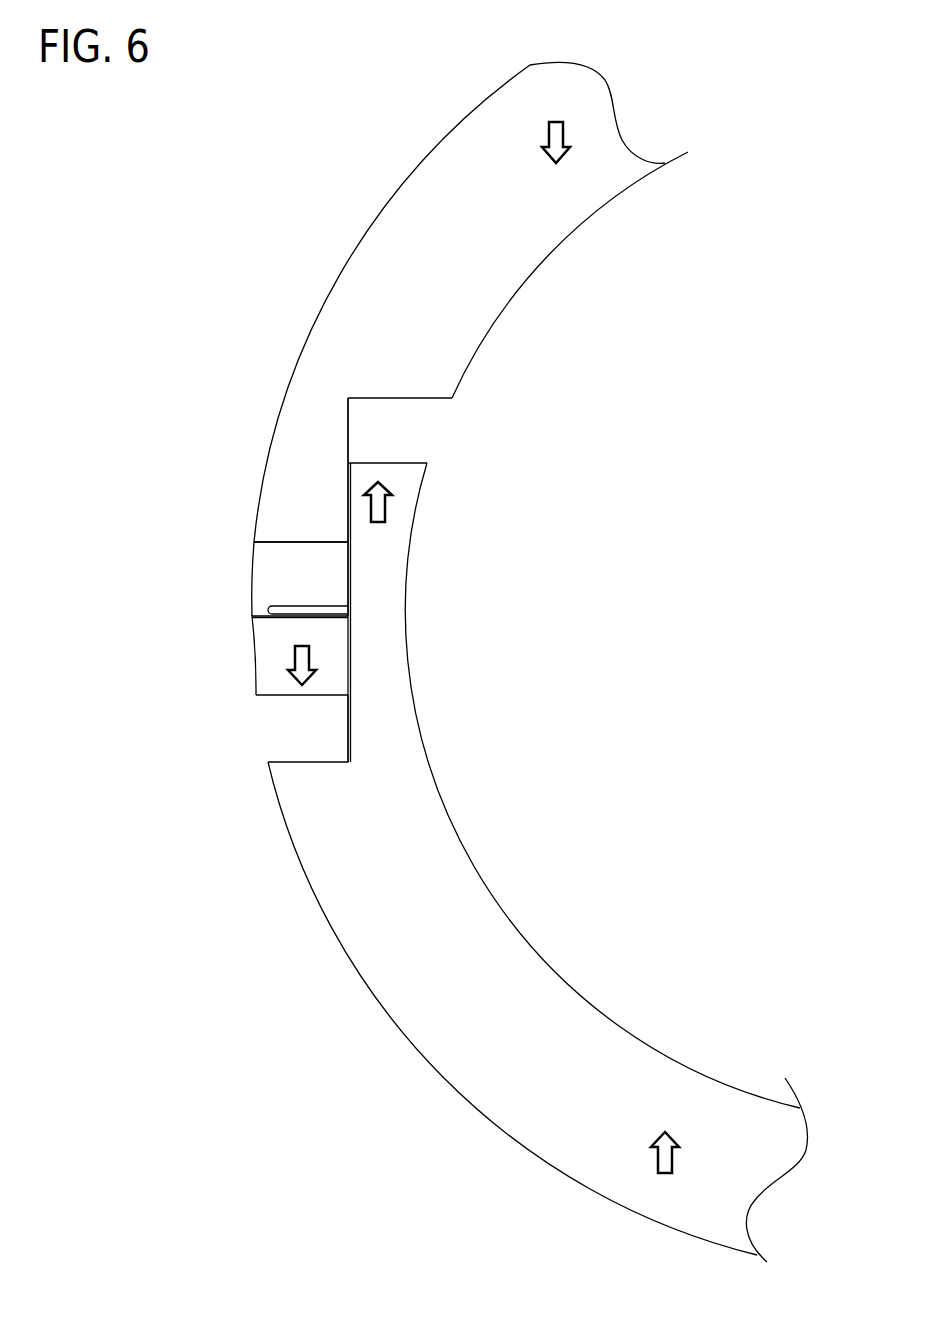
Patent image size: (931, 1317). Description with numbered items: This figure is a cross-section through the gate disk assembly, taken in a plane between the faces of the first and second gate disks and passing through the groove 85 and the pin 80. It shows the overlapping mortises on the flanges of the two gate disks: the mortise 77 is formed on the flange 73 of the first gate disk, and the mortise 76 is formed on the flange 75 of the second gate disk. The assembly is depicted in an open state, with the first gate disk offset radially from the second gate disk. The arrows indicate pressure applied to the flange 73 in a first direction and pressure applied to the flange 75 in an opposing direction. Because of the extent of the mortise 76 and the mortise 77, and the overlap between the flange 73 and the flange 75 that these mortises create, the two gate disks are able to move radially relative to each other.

The flange 73 is at (515, 197).
The flange 75 is at (529, 1056).
The mortise 76 is at (280, 738).
The mortise 77 is at (413, 419).
The pin 80 is at (268, 610).
The groove 85 is at (292, 580).